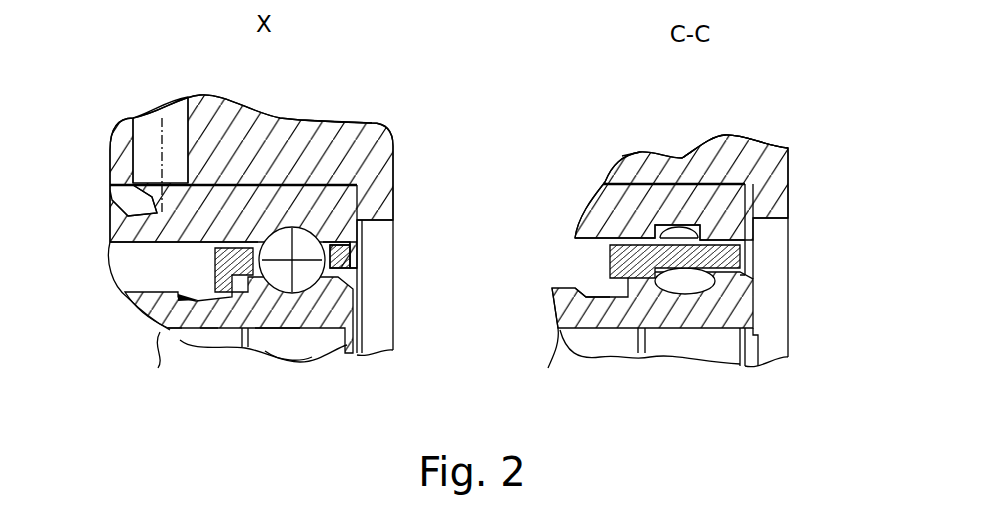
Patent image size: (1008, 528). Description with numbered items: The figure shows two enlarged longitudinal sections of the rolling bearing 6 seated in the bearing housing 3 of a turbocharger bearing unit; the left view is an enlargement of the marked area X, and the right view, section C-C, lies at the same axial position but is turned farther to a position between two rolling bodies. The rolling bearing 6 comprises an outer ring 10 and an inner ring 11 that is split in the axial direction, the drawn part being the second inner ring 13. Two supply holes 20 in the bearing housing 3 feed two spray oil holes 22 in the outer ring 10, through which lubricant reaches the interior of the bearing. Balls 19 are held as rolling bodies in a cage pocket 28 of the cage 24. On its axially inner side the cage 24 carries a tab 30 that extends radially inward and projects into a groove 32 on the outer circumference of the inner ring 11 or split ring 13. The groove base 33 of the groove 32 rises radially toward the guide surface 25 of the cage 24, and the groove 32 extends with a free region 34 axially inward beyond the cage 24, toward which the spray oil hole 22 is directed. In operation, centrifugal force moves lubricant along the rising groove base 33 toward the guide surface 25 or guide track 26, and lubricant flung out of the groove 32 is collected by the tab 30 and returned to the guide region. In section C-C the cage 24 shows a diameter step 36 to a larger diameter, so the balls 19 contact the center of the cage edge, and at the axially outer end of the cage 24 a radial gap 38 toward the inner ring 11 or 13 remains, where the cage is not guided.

The bearing housing 3 is at (268, 116).
The rolling bearing 6 is at (377, 290).
The outer ring 10 is at (352, 120).
The inner ring 11 is at (263, 351).
The second inner ring 13 is at (323, 340).
The balls 19 is at (327, 217).
The supply holes 20 is at (150, 122).
The spray oil holes 22 is at (127, 214).
The cage 24 is at (215, 257).
The guide surface 25 is at (282, 348).
The guide track 26 is at (288, 355).
The cage pocket 28 is at (331, 230).
The tab 30 is at (190, 300).
The groove 32 is at (160, 332).
The groove base 33 is at (210, 330).
The free region 34 is at (170, 330).
The diameter step 36 is at (735, 140).
The radial gap 38 is at (758, 265).